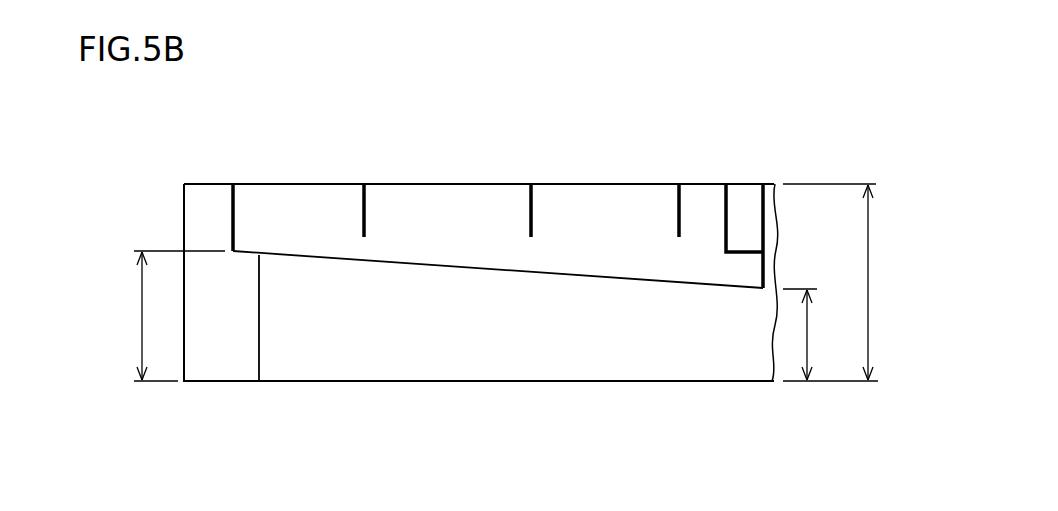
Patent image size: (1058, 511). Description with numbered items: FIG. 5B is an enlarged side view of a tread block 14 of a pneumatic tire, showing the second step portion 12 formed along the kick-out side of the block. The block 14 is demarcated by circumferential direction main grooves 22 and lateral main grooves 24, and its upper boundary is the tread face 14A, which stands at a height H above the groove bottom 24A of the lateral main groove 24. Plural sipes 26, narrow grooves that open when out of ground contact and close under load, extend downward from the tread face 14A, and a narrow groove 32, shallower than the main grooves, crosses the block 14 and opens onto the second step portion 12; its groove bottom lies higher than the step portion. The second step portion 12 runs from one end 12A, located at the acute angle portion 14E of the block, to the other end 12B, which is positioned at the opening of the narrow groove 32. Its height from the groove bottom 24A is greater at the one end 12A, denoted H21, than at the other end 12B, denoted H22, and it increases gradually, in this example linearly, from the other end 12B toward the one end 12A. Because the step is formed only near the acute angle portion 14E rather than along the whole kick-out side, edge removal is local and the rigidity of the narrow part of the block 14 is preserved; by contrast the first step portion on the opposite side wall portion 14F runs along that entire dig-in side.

The second step portion 12 is at (483, 267).
The one end 12A is at (233, 250).
The other end 12B is at (760, 285).
The block 14 is at (577, 182).
The tread face 14A is at (410, 184).
The acute angle portion 14E is at (240, 184).
The side wall portion 14F is at (383, 358).
The circumferential direction main groove 22 is at (137, 195).
The lateral main groove 24 is at (578, 361).
The groove bottom 24A is at (470, 381).
The sipe 26 is at (363, 198).
The narrow groove 32 is at (742, 213).
The height H is at (836, 282).
The height of one end H21 is at (160, 316).
The height of other end H22 is at (830, 335).